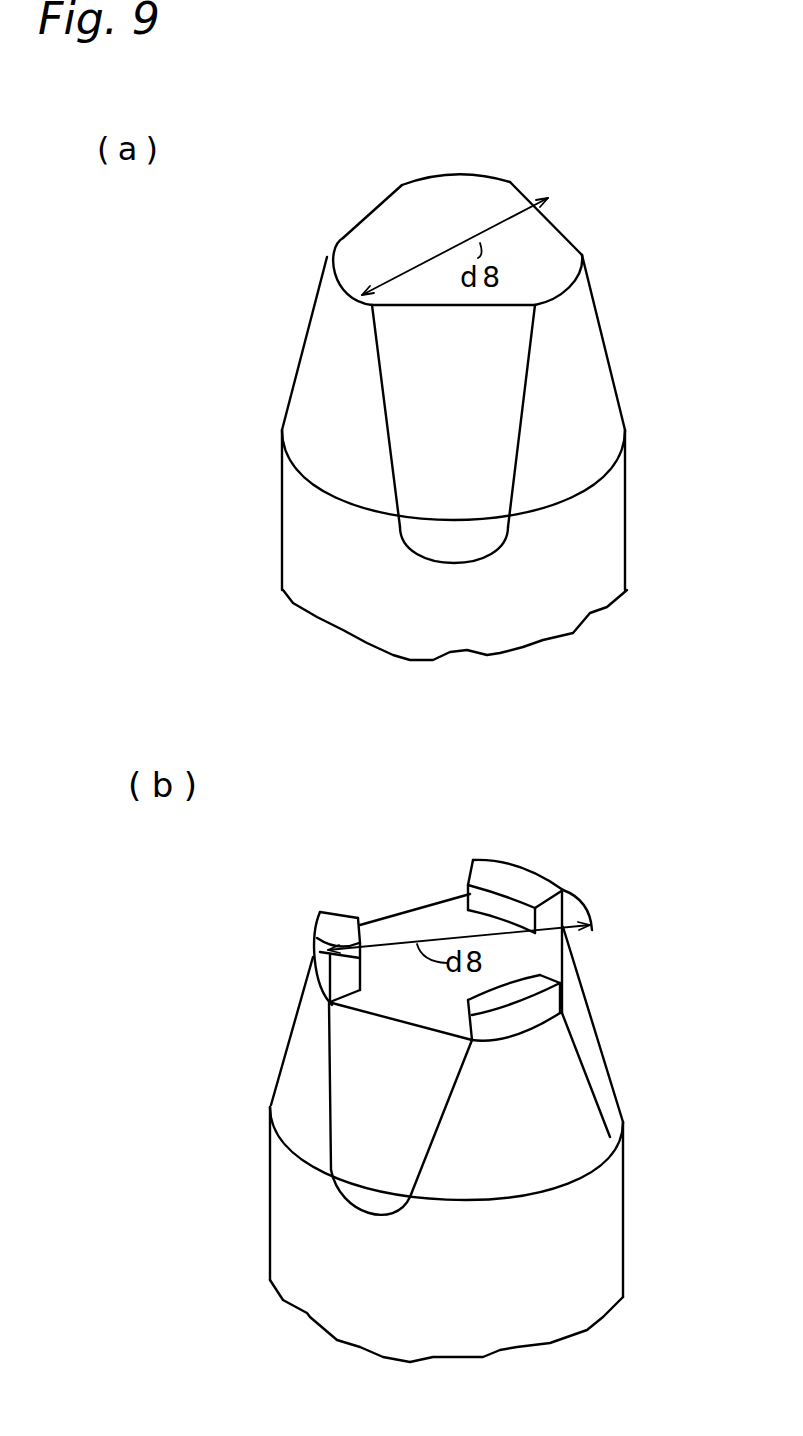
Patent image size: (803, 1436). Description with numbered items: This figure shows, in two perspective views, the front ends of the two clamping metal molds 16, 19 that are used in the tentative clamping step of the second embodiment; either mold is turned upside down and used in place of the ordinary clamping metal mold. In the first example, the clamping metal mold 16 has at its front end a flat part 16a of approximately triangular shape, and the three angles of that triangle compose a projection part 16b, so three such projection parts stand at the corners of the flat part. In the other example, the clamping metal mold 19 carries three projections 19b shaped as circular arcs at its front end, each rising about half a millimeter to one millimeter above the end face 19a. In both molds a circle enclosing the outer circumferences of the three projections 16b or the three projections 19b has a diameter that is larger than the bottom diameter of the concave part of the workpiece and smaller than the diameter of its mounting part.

The clamping metal mold 16 is at (603, 550).
The flat part 16a is at (447, 237).
The projection part 16b is at (348, 275).
The clamping metal mold 19 is at (582, 1228).
The end face 19a is at (437, 930).
The projection 19b is at (317, 937).